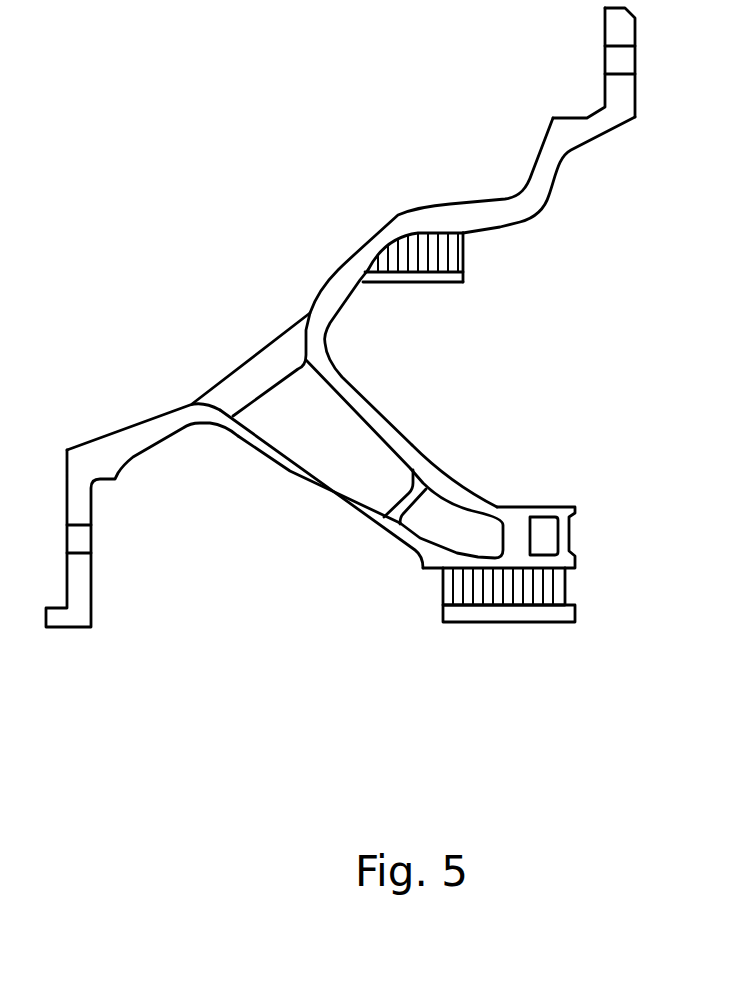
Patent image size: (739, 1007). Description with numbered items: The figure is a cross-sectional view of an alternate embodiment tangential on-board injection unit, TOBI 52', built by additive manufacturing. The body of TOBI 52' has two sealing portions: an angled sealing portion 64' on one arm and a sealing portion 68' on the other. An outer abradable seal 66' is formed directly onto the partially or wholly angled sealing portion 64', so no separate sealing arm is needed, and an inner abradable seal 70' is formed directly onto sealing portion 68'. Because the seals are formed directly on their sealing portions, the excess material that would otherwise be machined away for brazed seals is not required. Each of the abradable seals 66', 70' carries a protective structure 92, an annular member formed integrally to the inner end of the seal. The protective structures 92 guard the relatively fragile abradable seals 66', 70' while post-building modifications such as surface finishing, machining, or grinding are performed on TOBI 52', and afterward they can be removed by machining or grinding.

The TOBI 52' is at (178, 470).
The sealing portion 64' is at (434, 226).
The outer abradable seal 66' is at (476, 257).
The sealing portion 68' is at (361, 469).
The inner abradable seal 70' is at (563, 556).
The protective structure 92 is at (373, 282).